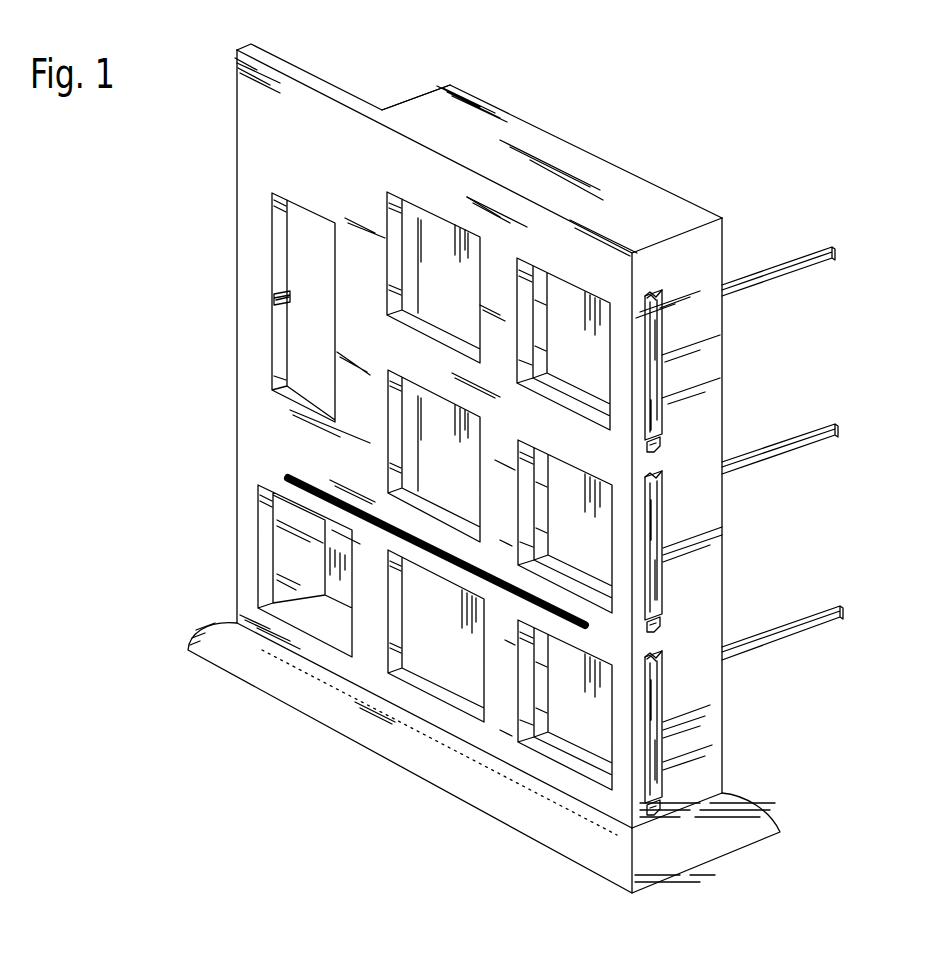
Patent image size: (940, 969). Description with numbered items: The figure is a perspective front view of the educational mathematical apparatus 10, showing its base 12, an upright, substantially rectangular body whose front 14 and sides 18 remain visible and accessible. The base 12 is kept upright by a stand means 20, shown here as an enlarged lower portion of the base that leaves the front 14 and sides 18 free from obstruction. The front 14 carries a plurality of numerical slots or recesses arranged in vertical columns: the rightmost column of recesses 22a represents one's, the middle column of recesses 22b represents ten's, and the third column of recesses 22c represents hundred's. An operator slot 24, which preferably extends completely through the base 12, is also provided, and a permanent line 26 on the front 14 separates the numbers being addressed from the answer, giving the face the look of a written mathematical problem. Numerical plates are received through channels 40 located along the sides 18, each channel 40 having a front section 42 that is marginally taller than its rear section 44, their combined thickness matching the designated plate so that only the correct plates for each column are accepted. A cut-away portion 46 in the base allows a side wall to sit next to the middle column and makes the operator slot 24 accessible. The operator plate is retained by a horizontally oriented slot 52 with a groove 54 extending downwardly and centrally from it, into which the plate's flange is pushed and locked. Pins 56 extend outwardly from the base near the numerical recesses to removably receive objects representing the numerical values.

The educational mathematical apparatus 10 is at (754, 153).
The base 12 is at (112, 366).
The front 14 is at (253, 412).
The sides 18 is at (708, 670).
The stand means 20 is at (270, 684).
The numerical recesses 22a is at (582, 306).
The numerical recesses 22b is at (442, 228).
The numerical recesses 22c is at (287, 551).
The operator slot 24 is at (287, 250).
The line 26 is at (290, 478).
The channel 40 is at (660, 388).
The front section 42 is at (645, 450).
The rear section 44 is at (662, 298).
The cut-away portion 46 is at (383, 86).
The slot 52 is at (297, 286).
The groove 54 is at (294, 310).
The pins 56 is at (827, 430).